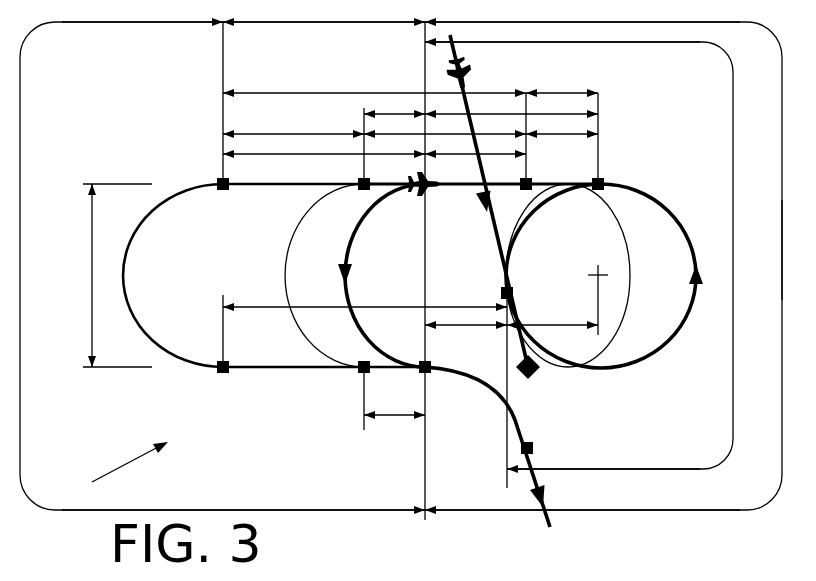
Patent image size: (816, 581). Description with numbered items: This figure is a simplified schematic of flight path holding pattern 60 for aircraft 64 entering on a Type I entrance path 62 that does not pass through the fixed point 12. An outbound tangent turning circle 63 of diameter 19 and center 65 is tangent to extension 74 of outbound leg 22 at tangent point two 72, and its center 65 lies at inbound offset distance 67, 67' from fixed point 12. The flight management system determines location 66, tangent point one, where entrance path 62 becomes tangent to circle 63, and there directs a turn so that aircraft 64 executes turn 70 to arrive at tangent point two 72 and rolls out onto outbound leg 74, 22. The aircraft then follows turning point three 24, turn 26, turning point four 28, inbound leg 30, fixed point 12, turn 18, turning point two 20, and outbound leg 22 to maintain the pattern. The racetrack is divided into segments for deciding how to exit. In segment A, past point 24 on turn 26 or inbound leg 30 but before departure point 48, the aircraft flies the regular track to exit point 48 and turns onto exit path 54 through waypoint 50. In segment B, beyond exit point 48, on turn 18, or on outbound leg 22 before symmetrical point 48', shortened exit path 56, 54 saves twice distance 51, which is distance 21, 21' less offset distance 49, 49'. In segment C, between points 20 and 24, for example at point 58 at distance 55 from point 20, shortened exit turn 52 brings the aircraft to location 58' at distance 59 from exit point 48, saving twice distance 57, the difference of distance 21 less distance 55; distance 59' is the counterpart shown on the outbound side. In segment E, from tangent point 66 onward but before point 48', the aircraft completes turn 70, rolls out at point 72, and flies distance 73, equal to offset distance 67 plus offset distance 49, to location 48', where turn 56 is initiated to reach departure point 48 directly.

The holding pattern segment A is at (22, 157).
The holding pattern segment B is at (781, 222).
The holding pattern segment C is at (289, 25).
The holding pattern segment E is at (732, 88).
The fixed point 12 is at (536, 376).
The turn 18 is at (632, 267).
The diameter 19 is at (92, 312).
The turning point two 20 is at (499, 232).
The distance 21 is at (374, 70).
The distance 21' is at (365, 283).
The outbound leg 22 is at (262, 186).
The turning point three 24 is at (220, 187).
The turn 26 is at (124, 294).
The turning point four 28 is at (222, 371).
The inbound leg 30 is at (298, 370).
The departure or exit point 48 is at (449, 397).
The symmetrical point 48' is at (425, 207).
The exit point offset distance 49 is at (466, 343).
The offset distance 49' is at (475, 169).
The waypoint 50 is at (535, 448).
The distance 51 is at (292, 157).
The turn 52 is at (284, 290).
The exit path 54 is at (533, 502).
The distance 55 is at (403, 133).
The turn 56 is at (352, 235).
The distance 57 is at (297, 131).
The point 58 is at (342, 172).
The location 58' is at (346, 386).
The distance 59 is at (394, 444).
The distance 59' is at (386, 85).
The flight path holding pattern 60 is at (113, 468).
The entrance path 62 is at (432, 43).
The outbound tangent turning circle 63 is at (527, 191).
The aircraft 64 is at (470, 80).
The center 65 is at (597, 272).
The tangent point one 66 is at (514, 293).
The inbound offset distance 67 is at (568, 369).
The offset distance 67' is at (562, 110).
The turn 70 is at (676, 327).
The tangent point two 72 is at (604, 183).
The distance 73 is at (555, 112).
The extension of outbound leg 74 is at (545, 190).